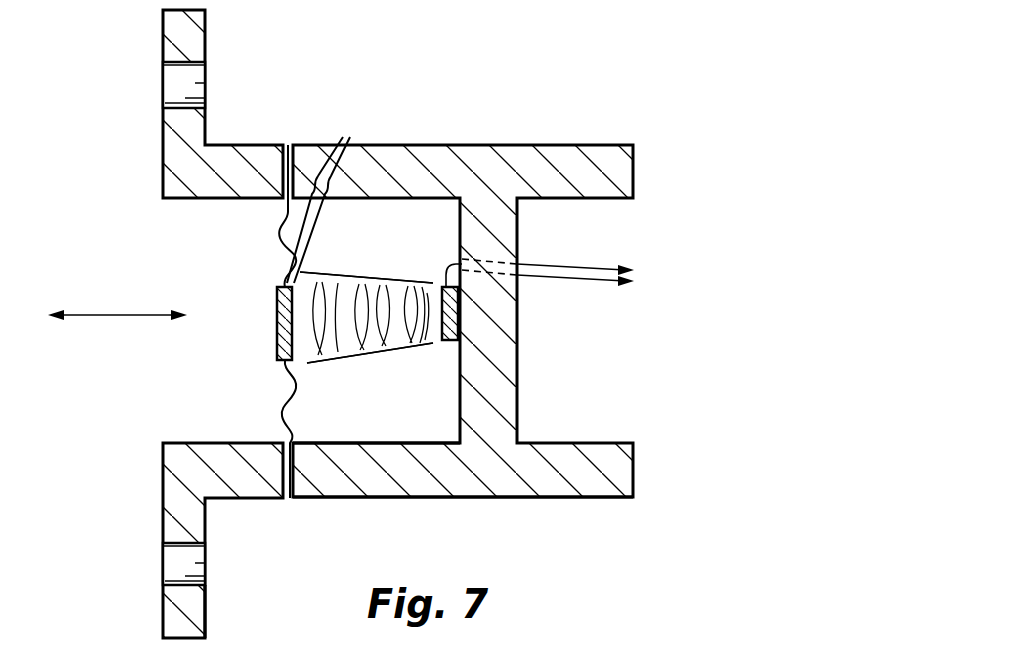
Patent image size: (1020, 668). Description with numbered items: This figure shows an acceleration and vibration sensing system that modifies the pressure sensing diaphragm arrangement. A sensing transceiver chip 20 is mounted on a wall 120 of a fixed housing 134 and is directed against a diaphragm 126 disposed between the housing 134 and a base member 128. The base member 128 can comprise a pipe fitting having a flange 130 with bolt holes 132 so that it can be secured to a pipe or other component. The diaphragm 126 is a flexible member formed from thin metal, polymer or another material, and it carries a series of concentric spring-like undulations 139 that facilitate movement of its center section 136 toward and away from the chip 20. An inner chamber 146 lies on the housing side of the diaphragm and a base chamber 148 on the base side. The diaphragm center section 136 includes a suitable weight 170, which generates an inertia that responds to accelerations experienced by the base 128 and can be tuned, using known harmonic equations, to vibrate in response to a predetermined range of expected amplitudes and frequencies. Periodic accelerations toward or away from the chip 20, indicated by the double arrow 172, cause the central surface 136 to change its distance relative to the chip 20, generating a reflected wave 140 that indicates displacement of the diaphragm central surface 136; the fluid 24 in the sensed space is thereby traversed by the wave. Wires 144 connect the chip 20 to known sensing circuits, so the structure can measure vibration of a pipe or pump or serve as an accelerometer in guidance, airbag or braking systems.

The sensing transceiver chip 20 is at (446, 343).
The fluid 24 is at (352, 276).
The wall 120 is at (517, 420).
The diaphragm 126 is at (276, 279).
The base member 128 is at (247, 145).
The flange 130 is at (205, 612).
The bolt holes 132 is at (262, 64).
The fixed housing 134 is at (490, 518).
The center section of the diaphragm 136 is at (297, 280).
The concentric undulations 139 is at (330, 198).
The reflected wave 140 is at (386, 350).
The wires 144 is at (583, 270).
The inner chamber 146 is at (356, 439).
The base chamber 148 is at (212, 439).
The weight 170 is at (278, 320).
The double arrow 172 is at (103, 318).